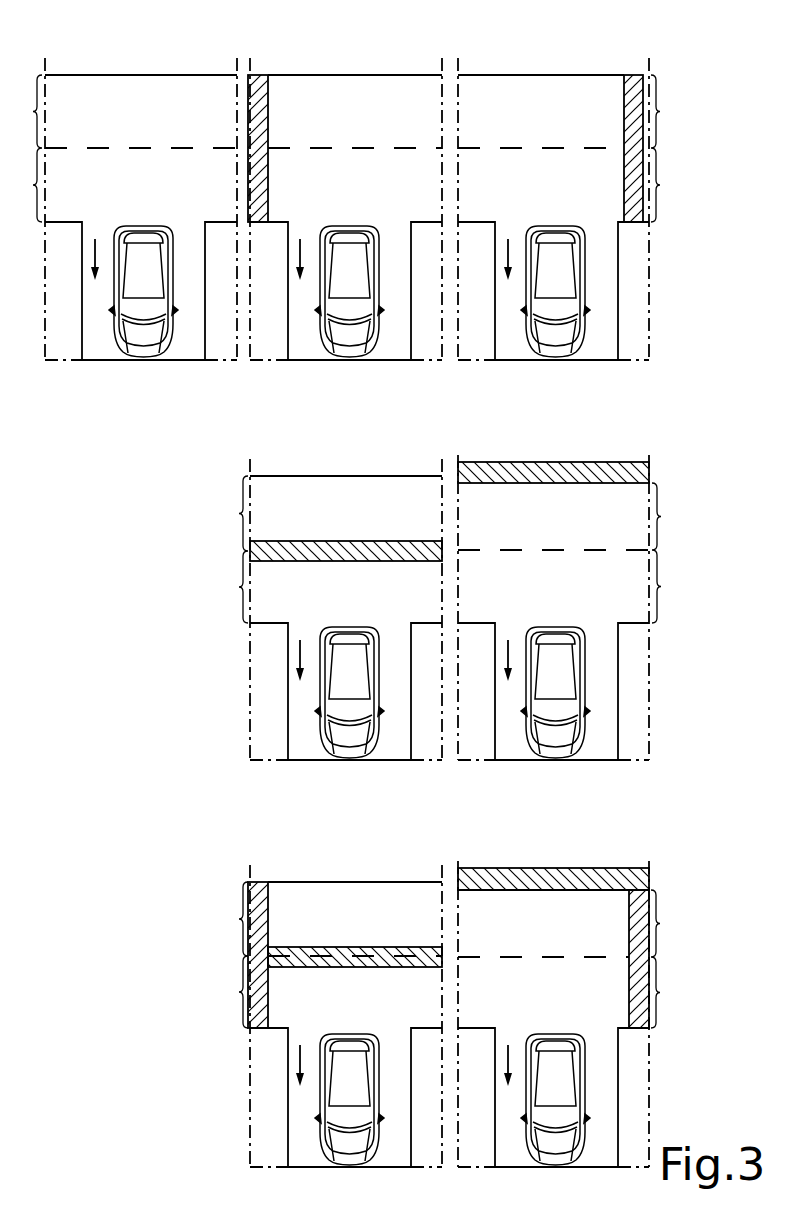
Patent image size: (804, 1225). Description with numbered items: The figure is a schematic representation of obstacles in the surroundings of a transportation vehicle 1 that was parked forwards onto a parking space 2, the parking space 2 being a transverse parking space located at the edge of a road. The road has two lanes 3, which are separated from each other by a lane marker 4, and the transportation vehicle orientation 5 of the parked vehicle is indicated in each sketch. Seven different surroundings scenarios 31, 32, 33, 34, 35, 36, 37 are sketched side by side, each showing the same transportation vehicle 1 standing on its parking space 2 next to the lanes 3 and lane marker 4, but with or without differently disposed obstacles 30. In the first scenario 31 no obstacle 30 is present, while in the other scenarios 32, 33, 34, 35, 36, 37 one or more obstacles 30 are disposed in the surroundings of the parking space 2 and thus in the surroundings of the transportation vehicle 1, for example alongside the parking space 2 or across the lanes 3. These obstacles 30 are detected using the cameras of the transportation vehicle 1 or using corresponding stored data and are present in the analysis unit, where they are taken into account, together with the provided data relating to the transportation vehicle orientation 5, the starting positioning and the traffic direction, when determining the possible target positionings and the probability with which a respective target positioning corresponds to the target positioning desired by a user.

The transportation vehicle 1 is at (189, 274).
The parking space 2 is at (186, 356).
The lanes 3 is at (345, 551).
The lane marker 4 is at (100, 147).
The transportation vehicle orientation 5 is at (93, 250).
The obstacles 30 is at (262, 76).
The surroundings scenario 31 is at (141, 191).
The surroundings scenario 32 is at (346, 191).
The surroundings scenario 33 is at (553, 191).
The surroundings scenario 34 is at (346, 590).
The surroundings scenario 35 is at (553, 590).
The surroundings scenario 36 is at (346, 997).
The surroundings scenario 37 is at (553, 997).